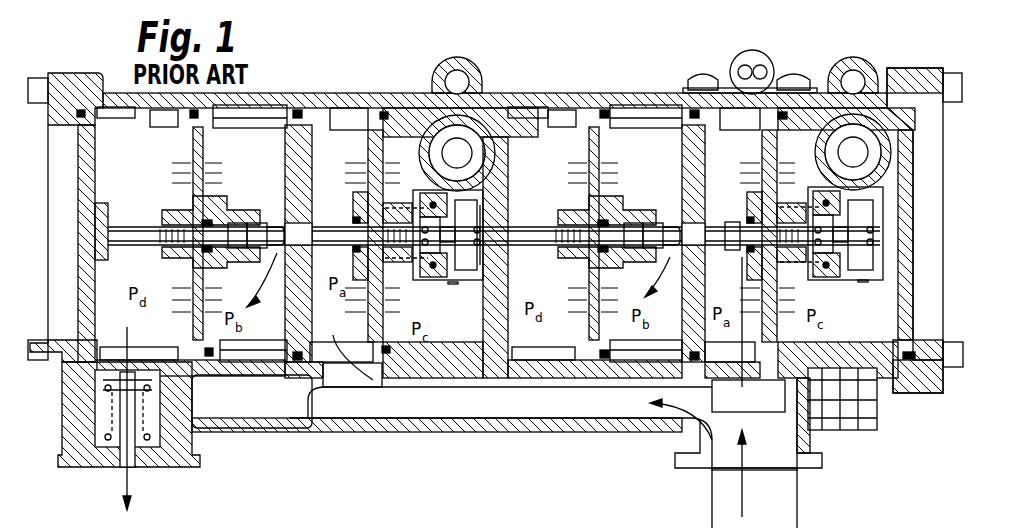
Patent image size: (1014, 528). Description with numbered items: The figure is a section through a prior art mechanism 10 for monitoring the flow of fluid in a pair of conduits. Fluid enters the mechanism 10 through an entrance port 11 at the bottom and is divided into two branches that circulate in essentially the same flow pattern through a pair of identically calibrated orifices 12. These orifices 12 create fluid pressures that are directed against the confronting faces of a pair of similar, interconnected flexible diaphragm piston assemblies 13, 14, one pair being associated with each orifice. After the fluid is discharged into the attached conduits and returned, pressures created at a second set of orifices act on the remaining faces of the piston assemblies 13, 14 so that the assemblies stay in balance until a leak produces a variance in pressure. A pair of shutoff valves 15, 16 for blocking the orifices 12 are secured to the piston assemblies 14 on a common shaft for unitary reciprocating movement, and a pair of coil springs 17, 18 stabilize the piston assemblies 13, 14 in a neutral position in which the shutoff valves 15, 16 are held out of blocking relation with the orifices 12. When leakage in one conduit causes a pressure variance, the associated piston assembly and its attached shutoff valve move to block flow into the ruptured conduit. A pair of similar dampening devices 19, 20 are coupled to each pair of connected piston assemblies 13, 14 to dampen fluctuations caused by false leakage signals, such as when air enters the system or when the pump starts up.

The mechanism 10 is at (535, 80).
The entrance port 11 is at (772, 470).
The orifices 12 is at (310, 222).
The flexible diaphragm piston assembly 13 is at (366, 153).
The flexible diaphragm piston assembly 14 is at (203, 147).
The shutoff valve 15 is at (672, 222).
The shutoff valve 16 is at (276, 222).
The coil spring 17 is at (792, 263).
The coil spring 18 is at (396, 262).
The dampening device 19 is at (863, 282).
The dampening device 20 is at (460, 281).